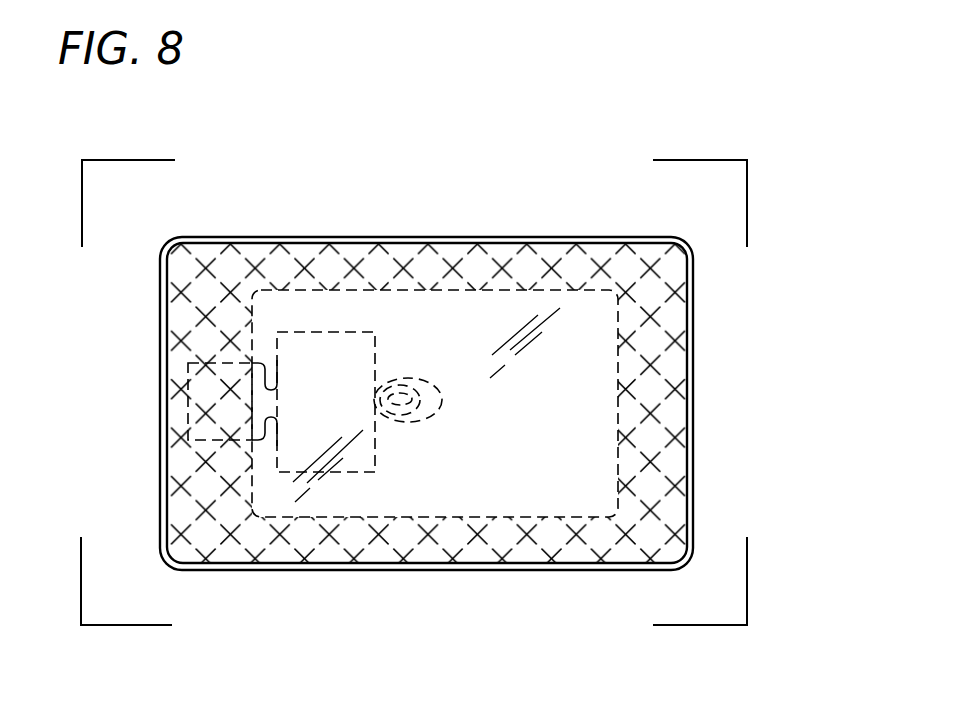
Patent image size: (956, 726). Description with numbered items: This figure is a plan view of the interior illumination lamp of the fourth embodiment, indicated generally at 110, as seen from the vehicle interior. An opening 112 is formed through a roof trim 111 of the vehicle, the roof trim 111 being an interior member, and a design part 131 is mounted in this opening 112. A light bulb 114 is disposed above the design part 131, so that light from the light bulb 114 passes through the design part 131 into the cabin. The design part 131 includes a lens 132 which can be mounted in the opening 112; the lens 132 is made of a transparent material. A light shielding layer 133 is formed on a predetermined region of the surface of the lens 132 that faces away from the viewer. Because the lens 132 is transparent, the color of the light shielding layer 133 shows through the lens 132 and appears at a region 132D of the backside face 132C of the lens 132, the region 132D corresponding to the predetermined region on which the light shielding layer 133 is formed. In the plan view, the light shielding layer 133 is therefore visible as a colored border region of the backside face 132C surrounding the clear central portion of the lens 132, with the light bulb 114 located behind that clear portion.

The IC card 110 is at (491, 396).
The roof trim 111 is at (698, 197).
The opening 112 is at (534, 563).
The light bulb 114 is at (432, 381).
The design part 131 is at (558, 246).
The lens 132 is at (397, 540).
The backside face 132C is at (468, 495).
The region 132D is at (327, 550).
The light shielding layer 133 is at (673, 337).